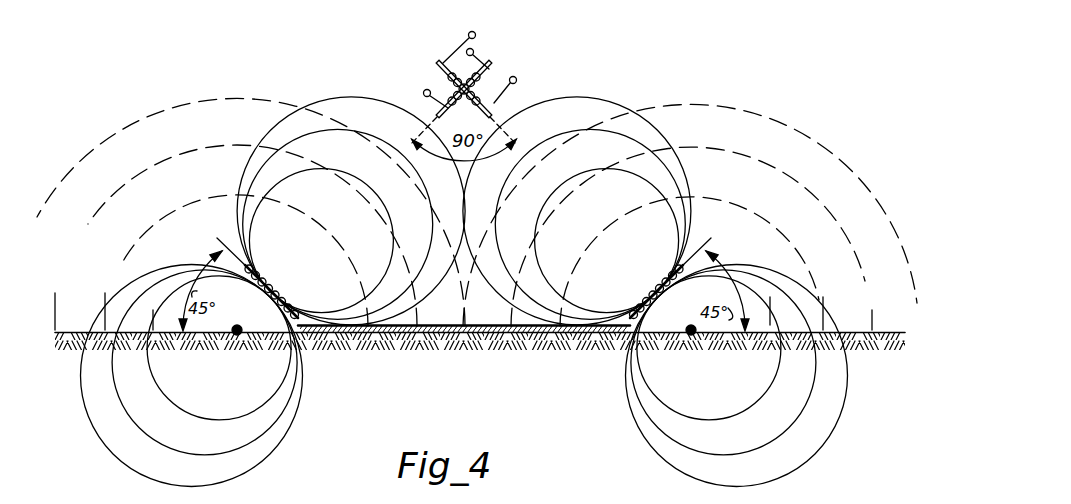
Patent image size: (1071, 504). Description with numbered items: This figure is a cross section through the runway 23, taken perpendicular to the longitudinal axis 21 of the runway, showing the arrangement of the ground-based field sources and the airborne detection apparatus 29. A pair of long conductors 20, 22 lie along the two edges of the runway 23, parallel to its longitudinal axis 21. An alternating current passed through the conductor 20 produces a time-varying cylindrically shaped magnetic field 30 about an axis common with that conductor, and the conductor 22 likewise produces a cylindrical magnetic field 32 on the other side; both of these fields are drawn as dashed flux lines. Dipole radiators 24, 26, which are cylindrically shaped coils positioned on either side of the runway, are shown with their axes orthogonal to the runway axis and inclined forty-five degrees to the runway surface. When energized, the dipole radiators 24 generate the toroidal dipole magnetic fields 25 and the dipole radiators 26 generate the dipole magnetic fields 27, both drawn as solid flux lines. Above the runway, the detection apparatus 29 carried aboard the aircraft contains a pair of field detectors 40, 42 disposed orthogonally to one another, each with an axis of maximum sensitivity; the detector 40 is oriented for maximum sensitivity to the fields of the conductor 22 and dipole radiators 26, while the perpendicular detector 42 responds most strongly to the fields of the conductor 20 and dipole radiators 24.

The conductor 20 is at (236, 336).
The longitudinal axis of the runway 21 is at (467, 338).
The conductor 22 is at (693, 336).
The runway 23 is at (421, 337).
The dipole radiator 24 is at (288, 286).
The magnetic field 25 is at (353, 95).
The dipole radiator 26 is at (640, 286).
The magnetic field 27 is at (584, 97).
The detection apparatus 29 is at (428, 78).
The magnetic field 30 is at (182, 105).
The magnetic field 32 is at (786, 116).
The field detector 40 is at (494, 73).
The field detector 42 is at (452, 57).